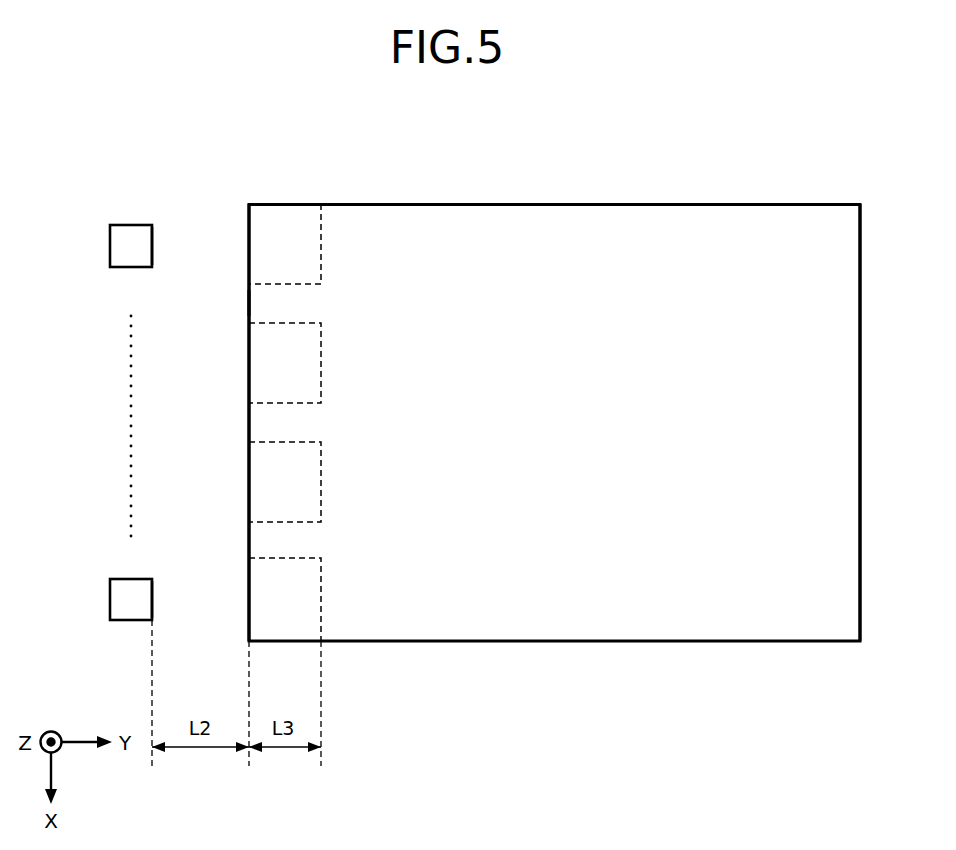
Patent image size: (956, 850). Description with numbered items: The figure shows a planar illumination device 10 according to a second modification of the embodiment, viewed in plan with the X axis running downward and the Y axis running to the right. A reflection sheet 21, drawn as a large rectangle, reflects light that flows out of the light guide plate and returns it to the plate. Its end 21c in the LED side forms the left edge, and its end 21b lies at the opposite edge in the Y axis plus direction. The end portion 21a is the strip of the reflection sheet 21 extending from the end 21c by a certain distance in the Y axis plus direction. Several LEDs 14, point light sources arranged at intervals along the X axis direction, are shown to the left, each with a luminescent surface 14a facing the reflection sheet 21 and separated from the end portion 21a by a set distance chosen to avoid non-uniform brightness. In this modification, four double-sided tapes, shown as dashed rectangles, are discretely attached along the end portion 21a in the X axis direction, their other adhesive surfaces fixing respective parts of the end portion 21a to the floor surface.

The planar illumination device 10 is at (776, 173).
The LED 14 is at (123, 225).
The luminescent surface 14a is at (152, 248).
The reflection sheet 21 is at (563, 203).
The end portion 21a is at (262, 243).
The end 21b is at (861, 203).
The end 21c is at (249, 302).